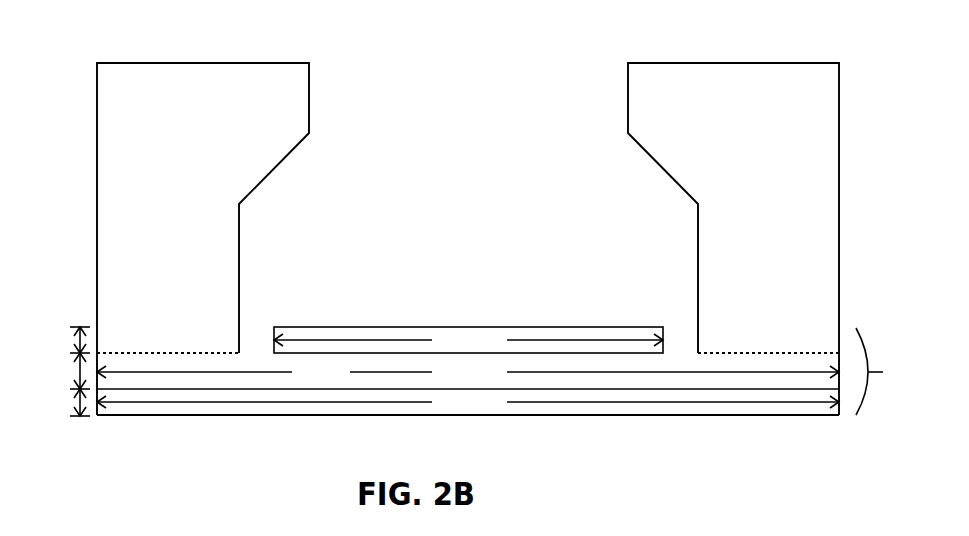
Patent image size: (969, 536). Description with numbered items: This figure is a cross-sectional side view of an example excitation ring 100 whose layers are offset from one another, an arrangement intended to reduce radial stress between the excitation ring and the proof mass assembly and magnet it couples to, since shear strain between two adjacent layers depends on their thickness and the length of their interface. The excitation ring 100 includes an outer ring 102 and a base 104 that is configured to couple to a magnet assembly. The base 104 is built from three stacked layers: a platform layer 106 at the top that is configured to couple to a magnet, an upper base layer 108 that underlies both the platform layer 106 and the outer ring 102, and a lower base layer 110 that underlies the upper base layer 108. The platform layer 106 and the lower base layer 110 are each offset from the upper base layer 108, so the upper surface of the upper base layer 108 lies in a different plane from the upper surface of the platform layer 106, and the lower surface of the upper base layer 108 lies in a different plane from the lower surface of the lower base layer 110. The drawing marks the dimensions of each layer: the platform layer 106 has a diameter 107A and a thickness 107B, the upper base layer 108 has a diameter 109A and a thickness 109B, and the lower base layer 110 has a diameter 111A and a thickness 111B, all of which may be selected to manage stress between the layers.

The excitation ring 100 is at (872, 174).
The outer ring 102 is at (757, 91).
The base 104 is at (890, 371).
The platform layer 106 is at (666, 345).
The diameter 107A is at (468, 339).
The thickness 107B is at (46, 340).
The upper base layer 108 is at (340, 381).
The diameter 109A is at (468, 370).
The thickness 109B is at (46, 371).
The lower base layer 110 is at (645, 415).
The diameter 111A is at (468, 400).
The thickness 111B is at (46, 402).